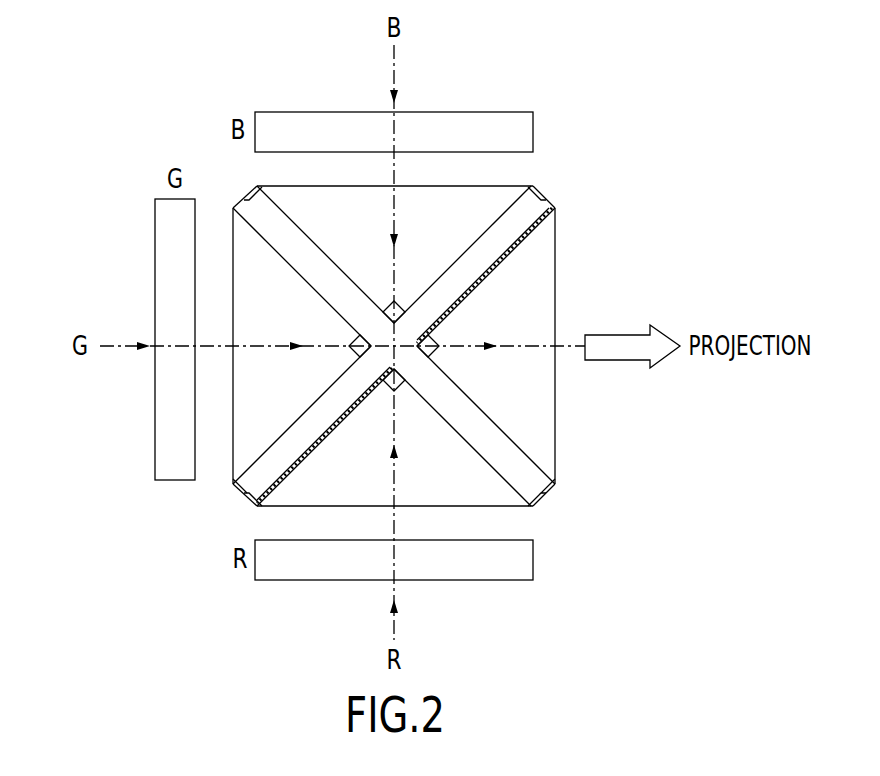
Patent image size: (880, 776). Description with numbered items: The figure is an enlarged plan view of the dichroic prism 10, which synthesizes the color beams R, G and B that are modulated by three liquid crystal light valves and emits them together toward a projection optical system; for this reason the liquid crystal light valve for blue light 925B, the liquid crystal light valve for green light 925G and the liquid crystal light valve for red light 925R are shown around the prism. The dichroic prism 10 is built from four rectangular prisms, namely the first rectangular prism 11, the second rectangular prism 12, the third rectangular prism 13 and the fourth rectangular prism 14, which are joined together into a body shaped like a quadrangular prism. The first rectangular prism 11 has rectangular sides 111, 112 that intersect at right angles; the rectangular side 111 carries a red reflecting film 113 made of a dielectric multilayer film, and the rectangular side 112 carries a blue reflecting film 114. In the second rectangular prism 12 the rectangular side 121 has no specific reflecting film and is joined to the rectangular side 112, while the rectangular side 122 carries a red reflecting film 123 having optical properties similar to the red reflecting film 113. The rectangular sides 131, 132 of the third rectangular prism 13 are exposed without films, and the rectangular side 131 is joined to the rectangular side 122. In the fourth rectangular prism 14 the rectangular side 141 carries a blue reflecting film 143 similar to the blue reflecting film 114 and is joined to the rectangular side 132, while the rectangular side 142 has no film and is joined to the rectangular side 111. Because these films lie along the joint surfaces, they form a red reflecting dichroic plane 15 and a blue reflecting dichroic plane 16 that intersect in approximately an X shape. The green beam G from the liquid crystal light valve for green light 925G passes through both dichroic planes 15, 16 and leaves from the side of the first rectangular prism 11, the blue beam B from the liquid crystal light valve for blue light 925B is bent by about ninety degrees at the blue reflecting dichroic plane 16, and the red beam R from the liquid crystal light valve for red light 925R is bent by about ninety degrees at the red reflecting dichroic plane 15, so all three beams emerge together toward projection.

The dichroic prism 10 is at (650, 96).
The first rectangular prism 11 is at (547, 276).
The second rectangular prism 12 is at (448, 495).
The third rectangular prism 13 is at (240, 305).
The fourth rectangular prism 14 is at (350, 200).
The red reflecting dichroic plane 15 is at (468, 309).
The blue reflecting dichroic plane 16 is at (514, 424).
The rectangular side 111 is at (545, 240).
The rectangular side 112 is at (530, 453).
The red reflecting film 113 is at (545, 202).
The blue reflecting film 114 is at (548, 487).
The rectangular side 121 is at (535, 505).
The rectangular side 122 is at (265, 503).
The red reflecting film 123 is at (257, 497).
The rectangular side 131 is at (242, 486).
The rectangular side 132 is at (233, 257).
The rectangular side 141 is at (294, 205).
The rectangular side 142 is at (540, 196).
The blue reflecting film 143 is at (245, 197).
The liquid crystal light valve for blue light 925B is at (505, 118).
The liquid crystal light valve for green light 925G is at (163, 437).
The liquid crystal light valve for red light 925R is at (322, 575).